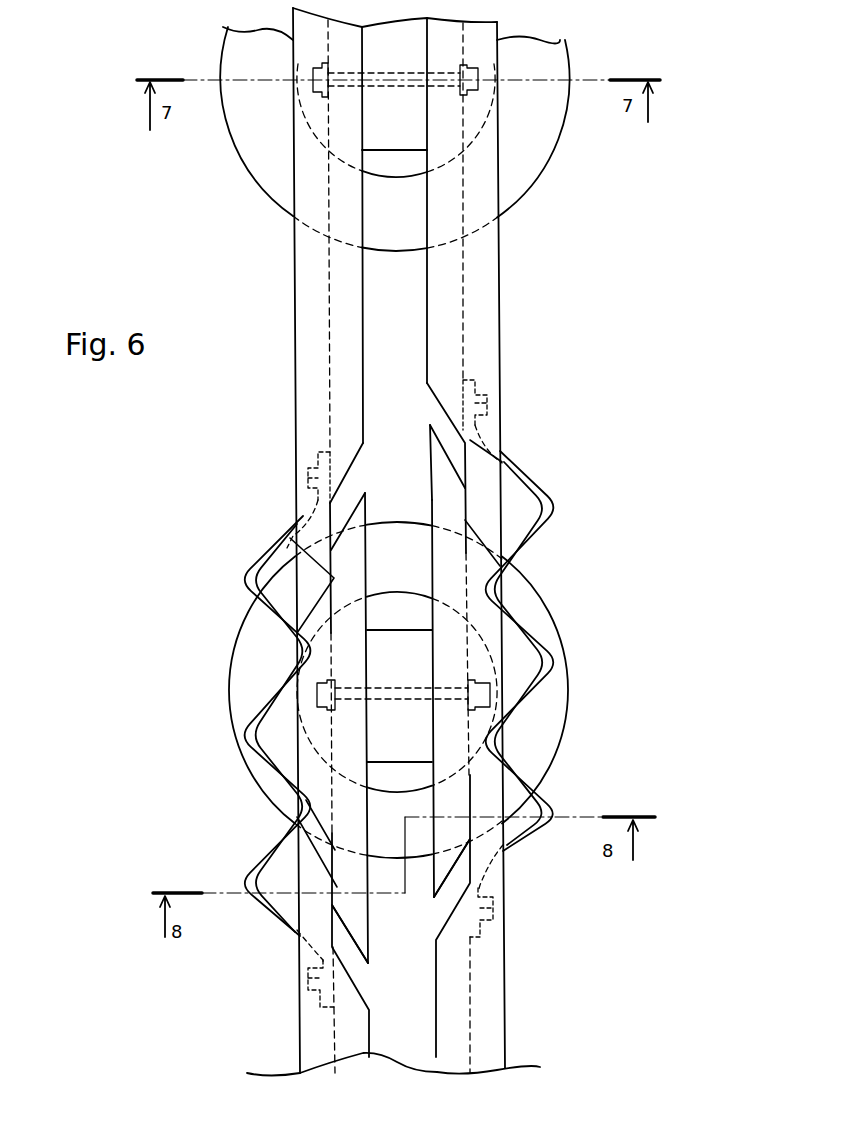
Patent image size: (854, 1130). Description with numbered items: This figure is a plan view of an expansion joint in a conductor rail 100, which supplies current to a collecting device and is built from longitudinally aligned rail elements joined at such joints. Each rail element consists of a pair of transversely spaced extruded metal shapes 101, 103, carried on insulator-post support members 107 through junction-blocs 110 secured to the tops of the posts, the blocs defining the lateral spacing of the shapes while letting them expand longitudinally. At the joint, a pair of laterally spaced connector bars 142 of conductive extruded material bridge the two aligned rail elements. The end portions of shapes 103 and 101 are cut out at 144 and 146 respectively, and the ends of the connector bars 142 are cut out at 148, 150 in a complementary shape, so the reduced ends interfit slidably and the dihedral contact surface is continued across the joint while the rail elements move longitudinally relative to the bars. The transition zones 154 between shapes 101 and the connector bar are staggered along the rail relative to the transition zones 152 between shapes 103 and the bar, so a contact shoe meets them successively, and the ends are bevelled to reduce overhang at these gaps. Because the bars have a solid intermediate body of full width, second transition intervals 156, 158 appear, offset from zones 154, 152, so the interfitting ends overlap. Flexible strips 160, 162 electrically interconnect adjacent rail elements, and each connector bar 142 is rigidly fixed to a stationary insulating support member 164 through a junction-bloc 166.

The conductor rail 100 is at (583, 539).
The extruded metal shape 101 is at (483, 258).
The extruded metal shape 103 is at (303, 270).
The support member 107 is at (520, 170).
The junction-bloc 110 is at (410, 113).
The connector bar 142 is at (457, 657).
The cut-out 144 is at (303, 543).
The cut-out 146 is at (480, 483).
The cut-out 148 is at (348, 563).
The cut-out 150 is at (447, 517).
The transition zone 152 is at (348, 493).
The transition zone 154 is at (443, 427).
The second transition interval 156 is at (480, 560).
The second transition interval 158 is at (318, 608).
The flexible strip 160 is at (533, 840).
The flexible strip 162 is at (268, 700).
The insulating support member 164 is at (543, 757).
The junction-bloc 166 is at (417, 735).